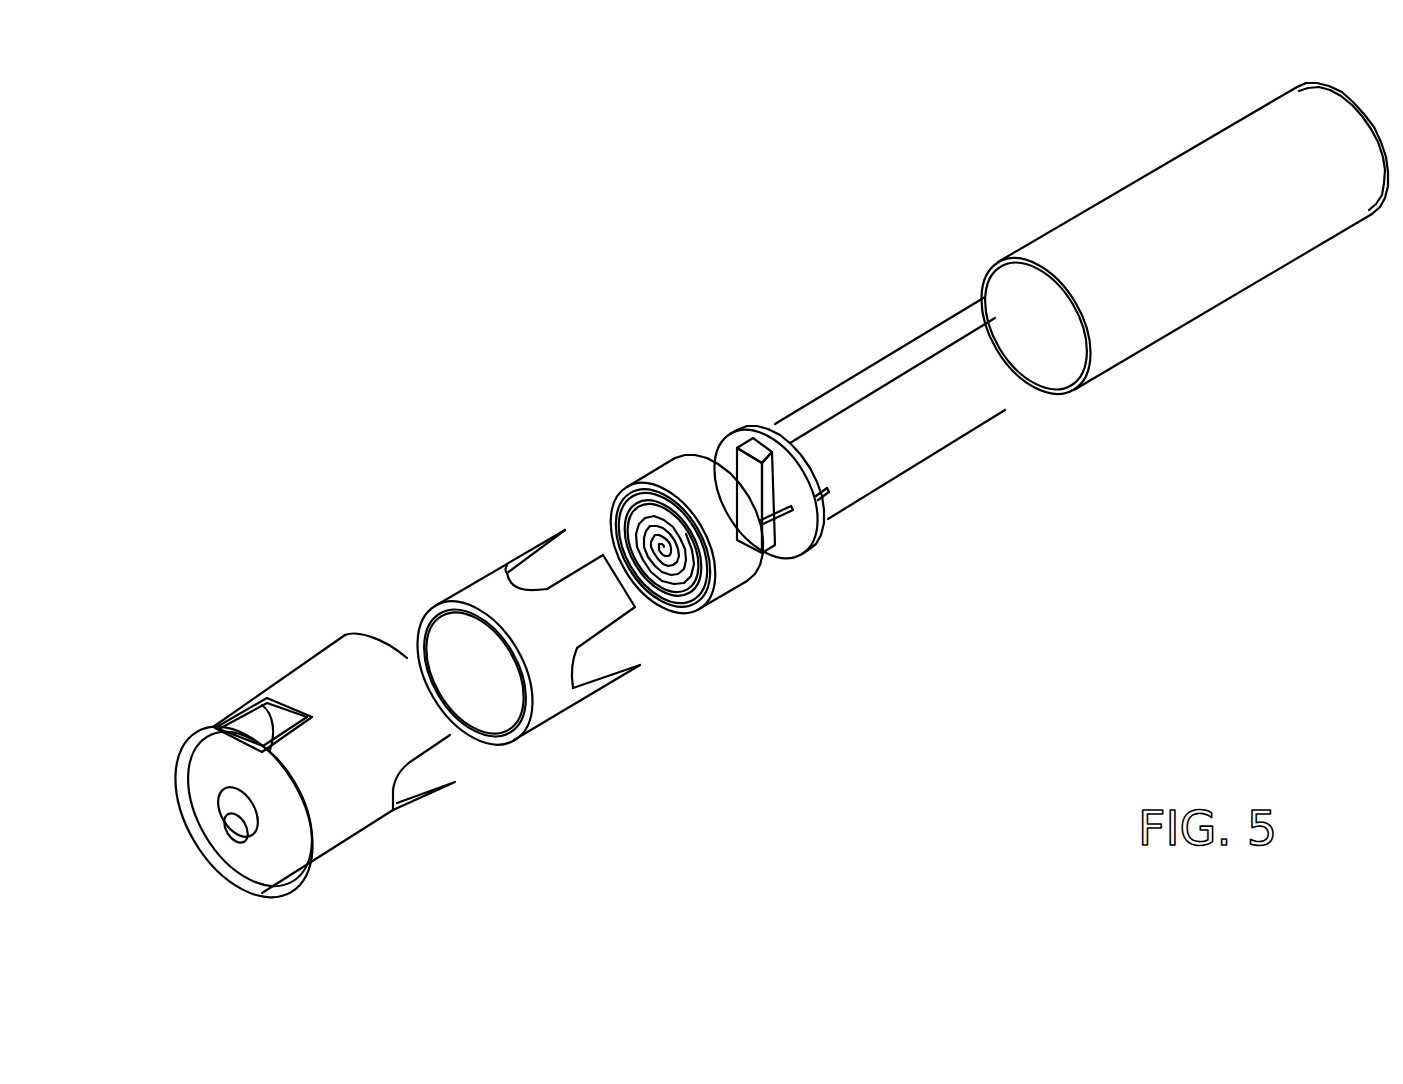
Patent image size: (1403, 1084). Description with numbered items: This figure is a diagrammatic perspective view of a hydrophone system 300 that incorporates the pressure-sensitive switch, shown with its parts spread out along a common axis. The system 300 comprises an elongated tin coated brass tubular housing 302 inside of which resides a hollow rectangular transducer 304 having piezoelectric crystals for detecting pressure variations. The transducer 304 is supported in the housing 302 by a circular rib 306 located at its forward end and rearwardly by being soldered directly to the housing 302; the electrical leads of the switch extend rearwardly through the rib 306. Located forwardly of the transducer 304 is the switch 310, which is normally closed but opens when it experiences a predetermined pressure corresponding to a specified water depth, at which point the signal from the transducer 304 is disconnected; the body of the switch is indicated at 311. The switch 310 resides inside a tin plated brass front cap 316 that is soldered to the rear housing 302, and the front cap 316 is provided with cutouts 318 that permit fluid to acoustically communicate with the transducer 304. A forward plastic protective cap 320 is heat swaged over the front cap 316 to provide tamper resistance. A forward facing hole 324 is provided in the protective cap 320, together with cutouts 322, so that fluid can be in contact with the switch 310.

The hydrophone system 300 is at (745, 318).
The tubular housing 302 is at (1243, 255).
The transducer 304 is at (945, 422).
The circular rib 306 is at (818, 525).
The switch 310 is at (770, 622).
The spring cap 311 is at (750, 560).
The front cap 316 is at (539, 607).
The cutouts 318 is at (563, 538).
The protective cap 320 is at (347, 785).
The cutouts 322 is at (455, 770).
The forward facing hole 324 is at (242, 877).